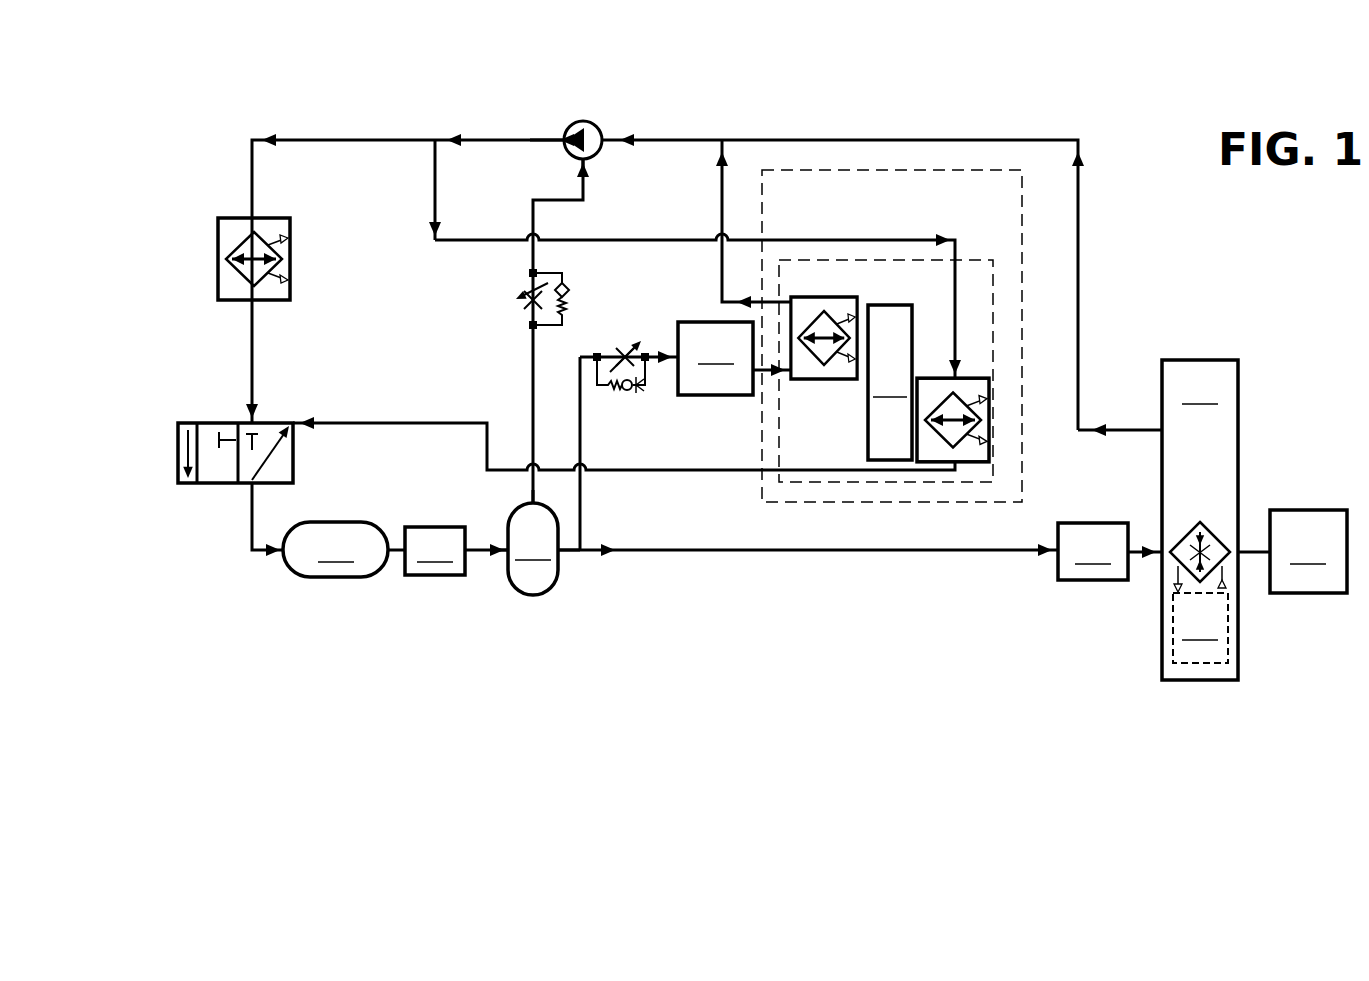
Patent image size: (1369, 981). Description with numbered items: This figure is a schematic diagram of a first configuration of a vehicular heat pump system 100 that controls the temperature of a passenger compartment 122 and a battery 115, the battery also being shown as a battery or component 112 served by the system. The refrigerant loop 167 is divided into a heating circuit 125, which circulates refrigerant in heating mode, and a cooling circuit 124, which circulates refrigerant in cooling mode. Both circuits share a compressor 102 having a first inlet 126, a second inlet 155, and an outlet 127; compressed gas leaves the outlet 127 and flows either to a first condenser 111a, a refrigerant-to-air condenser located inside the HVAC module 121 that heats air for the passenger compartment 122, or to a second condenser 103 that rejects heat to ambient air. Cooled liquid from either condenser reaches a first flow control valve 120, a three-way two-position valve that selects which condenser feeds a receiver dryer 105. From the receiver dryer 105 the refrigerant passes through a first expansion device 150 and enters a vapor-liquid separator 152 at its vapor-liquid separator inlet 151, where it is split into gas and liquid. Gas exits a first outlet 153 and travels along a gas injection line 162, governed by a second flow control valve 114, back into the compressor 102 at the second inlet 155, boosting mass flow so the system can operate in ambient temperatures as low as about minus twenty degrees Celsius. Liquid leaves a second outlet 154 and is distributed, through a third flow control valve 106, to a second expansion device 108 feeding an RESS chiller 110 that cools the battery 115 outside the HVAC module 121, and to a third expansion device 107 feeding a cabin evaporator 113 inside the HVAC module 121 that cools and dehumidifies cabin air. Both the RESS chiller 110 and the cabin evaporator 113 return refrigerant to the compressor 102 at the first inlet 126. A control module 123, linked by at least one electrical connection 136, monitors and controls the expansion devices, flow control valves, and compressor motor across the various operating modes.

The heat pump system 100 is at (861, 106).
The compressor 102 is at (584, 121).
The second condenser 103 is at (213, 232).
The receiver dryer 105 is at (335, 549).
The third flow control valve 106 is at (645, 387).
The third expansion device 107 is at (715, 358).
The second expansion device 108 is at (1093, 551).
The RESS chiller 110 is at (1200, 520).
The first condenser 111a is at (992, 400).
The battery / component 112 is at (890, 382).
The cabin evaporator 113 is at (832, 378).
The second flow control valve 114 is at (562, 275).
The battery 115 is at (1200, 628).
The first flow control valve 120 is at (200, 484).
The HVAC module 121 is at (780, 447).
The passenger compartment 122 is at (956, 172).
The control module 123 is at (1308, 551).
The cooling circuit 124 is at (354, 136).
The heating circuit 125 is at (640, 236).
The first inlet 126 is at (600, 132).
The outlet 127 is at (566, 133).
The electrical connection 136 is at (1252, 550).
The first expansion device 150 is at (435, 551).
The vapor-liquid separator inlet 151 is at (506, 556).
The vapor-liquid separator 152 is at (533, 549).
The first outlet 153 is at (530, 502).
The second outlet 154 is at (560, 556).
The second inlet 155 is at (592, 163).
The gas injection line 162 is at (551, 195).
The refrigerant loop 167 is at (503, 133).